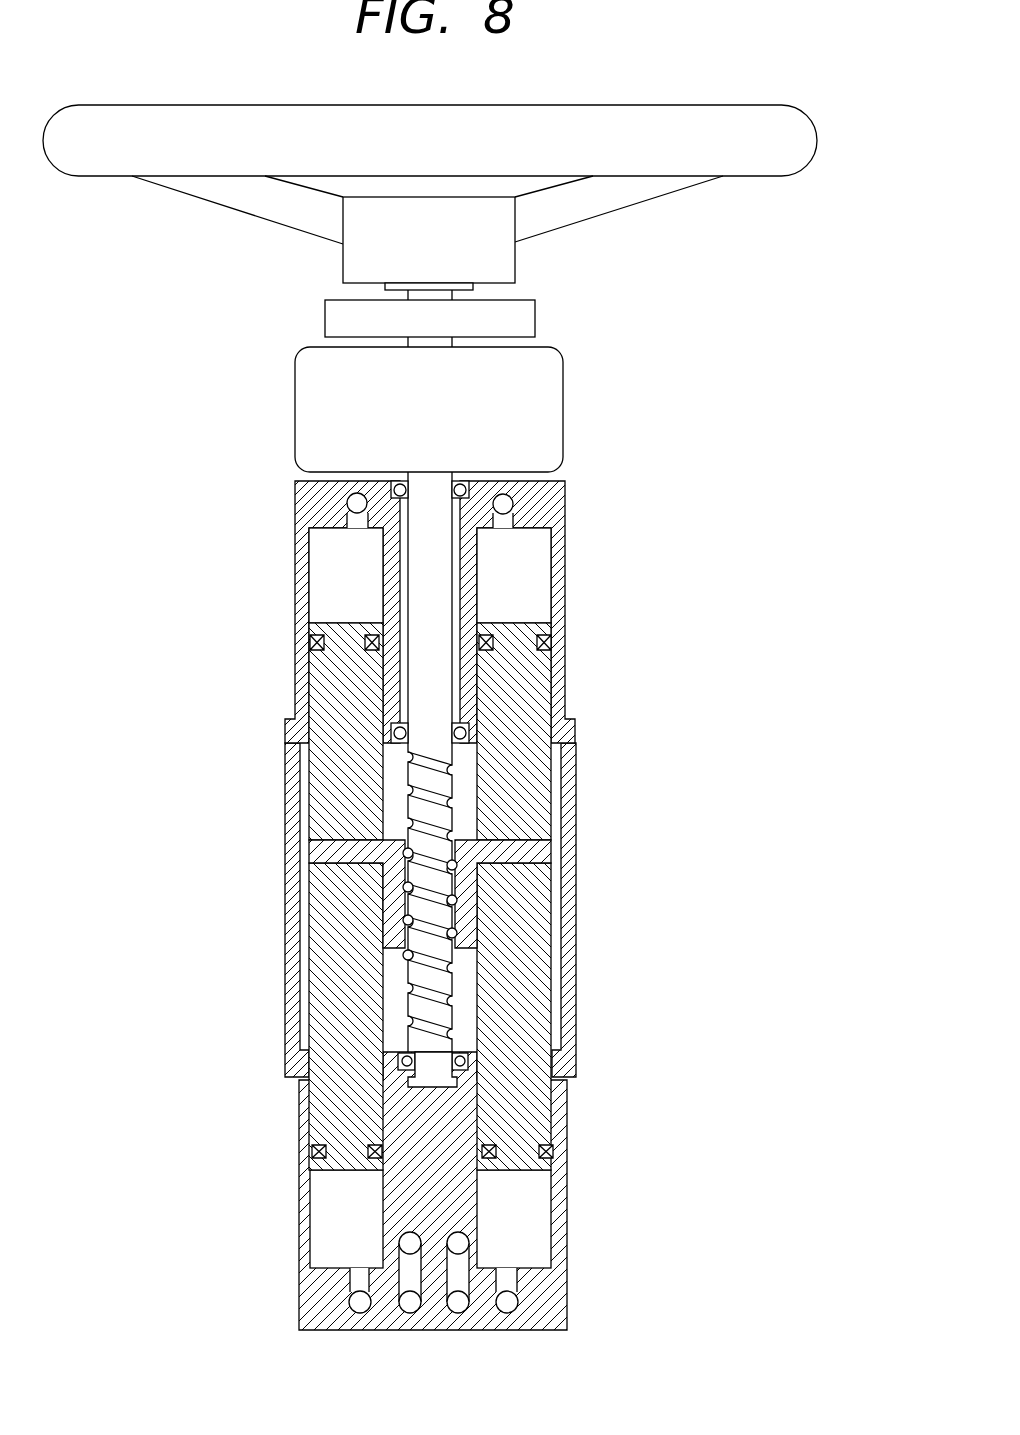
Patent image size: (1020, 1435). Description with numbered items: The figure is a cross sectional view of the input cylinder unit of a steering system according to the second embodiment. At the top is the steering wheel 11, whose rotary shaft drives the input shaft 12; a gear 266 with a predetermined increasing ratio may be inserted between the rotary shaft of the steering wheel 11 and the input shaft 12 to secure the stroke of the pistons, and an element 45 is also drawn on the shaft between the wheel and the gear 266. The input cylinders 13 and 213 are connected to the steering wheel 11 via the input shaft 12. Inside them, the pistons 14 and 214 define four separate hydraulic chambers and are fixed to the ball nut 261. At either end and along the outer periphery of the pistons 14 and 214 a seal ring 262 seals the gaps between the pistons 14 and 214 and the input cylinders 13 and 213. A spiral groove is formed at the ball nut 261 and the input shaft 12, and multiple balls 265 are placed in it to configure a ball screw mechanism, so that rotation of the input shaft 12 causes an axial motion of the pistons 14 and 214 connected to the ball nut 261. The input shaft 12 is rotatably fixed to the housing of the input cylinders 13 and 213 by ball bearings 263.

The steering wheel 11 is at (177, 158).
The input shaft 12 is at (437, 523).
The input cylinder 13 is at (295, 563).
The piston 14 is at (335, 690).
The rotation detector 45 is at (325, 310).
The input cylinder 213 is at (565, 577).
The piston 214 is at (545, 688).
The ball nut 261 is at (365, 855).
The seal ring 262 is at (551, 642).
The ball bearings 263 is at (467, 1052).
The balls 265 is at (457, 865).
The gear 266 is at (543, 370).